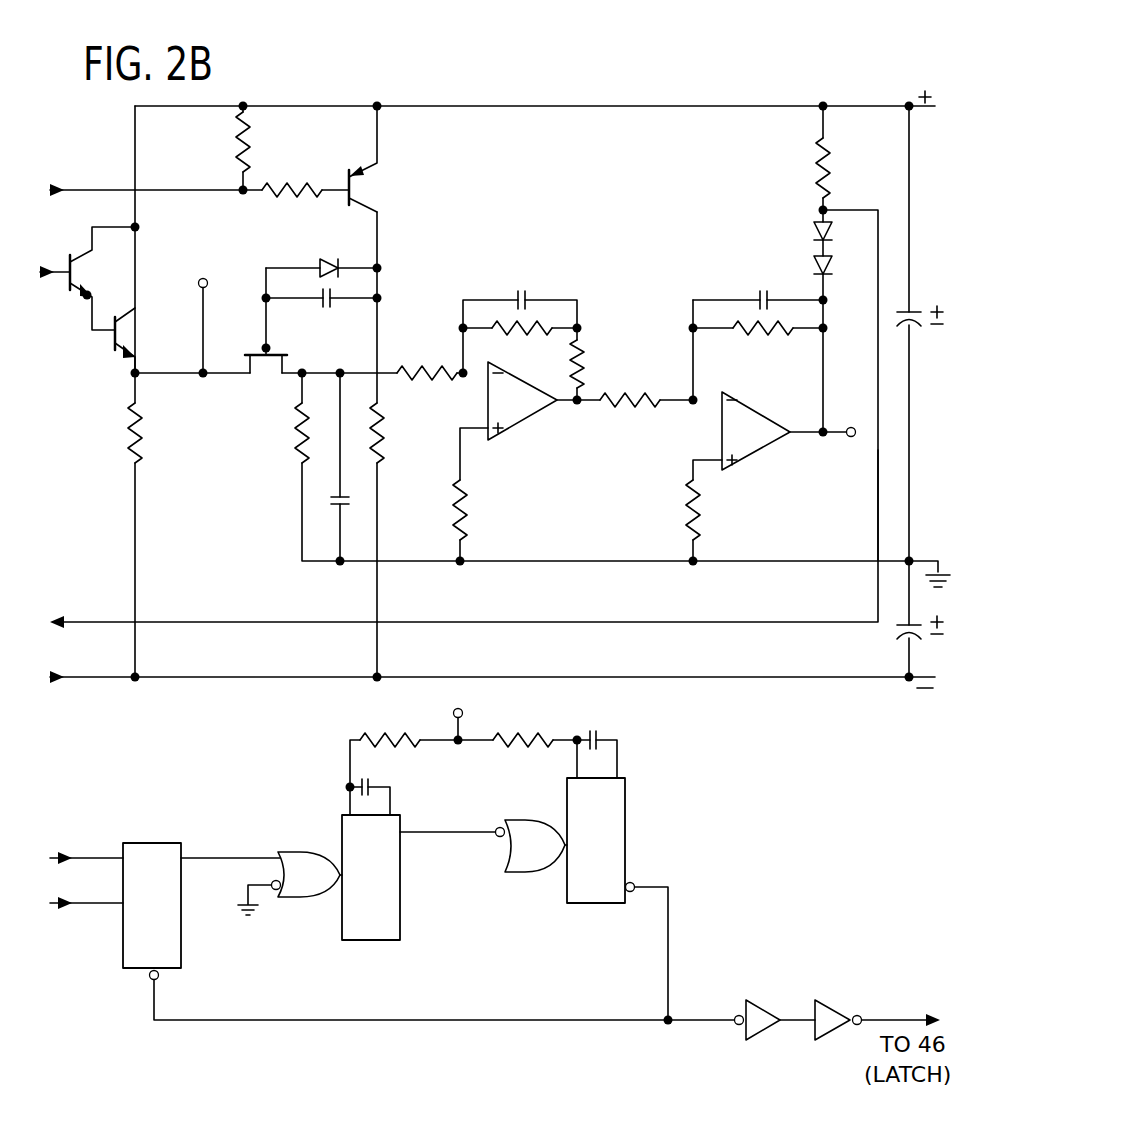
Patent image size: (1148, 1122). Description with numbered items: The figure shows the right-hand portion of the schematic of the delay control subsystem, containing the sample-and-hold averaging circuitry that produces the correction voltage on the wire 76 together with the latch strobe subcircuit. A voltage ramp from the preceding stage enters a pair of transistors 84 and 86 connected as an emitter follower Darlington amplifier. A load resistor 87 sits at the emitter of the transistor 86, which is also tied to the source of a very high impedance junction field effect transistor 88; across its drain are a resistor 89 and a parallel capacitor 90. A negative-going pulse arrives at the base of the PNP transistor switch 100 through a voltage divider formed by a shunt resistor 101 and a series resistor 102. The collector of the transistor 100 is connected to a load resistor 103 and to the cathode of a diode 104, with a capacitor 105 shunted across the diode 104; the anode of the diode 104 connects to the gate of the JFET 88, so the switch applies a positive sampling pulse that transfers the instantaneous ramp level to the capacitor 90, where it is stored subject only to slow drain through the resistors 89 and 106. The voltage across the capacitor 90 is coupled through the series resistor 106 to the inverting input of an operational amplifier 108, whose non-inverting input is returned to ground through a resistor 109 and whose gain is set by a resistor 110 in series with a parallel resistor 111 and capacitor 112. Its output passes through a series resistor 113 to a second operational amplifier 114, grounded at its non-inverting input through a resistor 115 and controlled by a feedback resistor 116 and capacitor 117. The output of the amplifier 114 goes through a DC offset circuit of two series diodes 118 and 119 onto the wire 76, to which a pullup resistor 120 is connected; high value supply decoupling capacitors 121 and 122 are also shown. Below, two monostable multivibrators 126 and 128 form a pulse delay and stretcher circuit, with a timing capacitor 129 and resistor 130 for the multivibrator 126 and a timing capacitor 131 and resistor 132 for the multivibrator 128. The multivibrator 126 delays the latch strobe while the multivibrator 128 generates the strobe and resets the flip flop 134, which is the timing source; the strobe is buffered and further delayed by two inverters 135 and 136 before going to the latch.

The wire 76 is at (878, 500).
The transistor 84 is at (72, 268).
The transistor 86 is at (117, 334).
The load resistor 87 is at (138, 438).
The junction field effect transistor 88 is at (268, 372).
The resistor 89 is at (301, 430).
The capacitor 90 is at (336, 500).
The PNP transistor switch 100 is at (351, 187).
The shunt resistor 101 is at (246, 128).
The series resistor 102 is at (281, 178).
The load resistor 103 is at (380, 416).
The diode 104 is at (334, 267).
The capacitor 105 is at (331, 305).
The series resistor 106 is at (439, 364).
The operational amplifier 108 is at (512, 428).
The resistor 109 is at (462, 497).
The resistor 110 is at (582, 361).
The resistor 111 is at (522, 338).
The capacitor 112 is at (528, 283).
The series resistor 113 is at (613, 408).
The second operational amplifier 114 is at (752, 455).
The series resistor 115 is at (690, 517).
The resistor 116 is at (764, 341).
The capacitor 117 is at (756, 294).
The diode 118 is at (815, 262).
The diode 119 is at (815, 224).
The pullup resistor 120 is at (813, 160).
The supply voltage decoupling capacitor 121 is at (916, 314).
The supply voltage decoupling capacitor 122 is at (905, 636).
The monostable multivibrator 126 is at (392, 852).
The monostable multivibrator 128 is at (617, 814).
The timing capacitor 129 is at (385, 771).
The resistor 130 is at (370, 712).
The timing capacitor 131 is at (596, 732).
The resistor 132 is at (520, 712).
The flip flop 134 is at (171, 884).
The inverter 135 is at (748, 1042).
The inverter 136 is at (815, 1040).